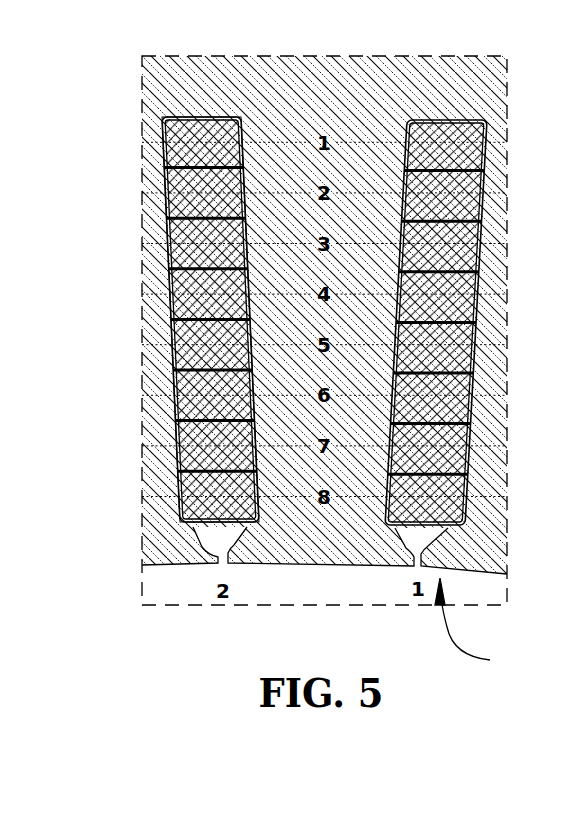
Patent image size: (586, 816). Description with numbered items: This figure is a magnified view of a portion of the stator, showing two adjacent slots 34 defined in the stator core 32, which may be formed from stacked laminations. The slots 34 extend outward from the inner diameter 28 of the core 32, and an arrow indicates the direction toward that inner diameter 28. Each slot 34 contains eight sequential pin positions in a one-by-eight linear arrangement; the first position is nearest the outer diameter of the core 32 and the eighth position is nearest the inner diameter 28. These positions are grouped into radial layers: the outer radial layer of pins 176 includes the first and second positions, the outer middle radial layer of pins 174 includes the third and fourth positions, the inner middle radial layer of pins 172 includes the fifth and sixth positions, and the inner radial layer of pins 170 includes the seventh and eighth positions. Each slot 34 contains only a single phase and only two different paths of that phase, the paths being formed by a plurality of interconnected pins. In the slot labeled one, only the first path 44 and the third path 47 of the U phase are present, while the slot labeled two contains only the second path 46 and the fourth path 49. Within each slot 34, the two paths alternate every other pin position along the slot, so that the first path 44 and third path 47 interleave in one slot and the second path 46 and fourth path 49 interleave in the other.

The inner diameter 28 is at (327, 563).
The stator core 32 is at (321, 88).
The slots 34 is at (476, 627).
The first path 44 is at (457, 520).
The second path 46 is at (195, 528).
The third path 47 is at (457, 477).
The fourth path 49 is at (183, 526).
The inner radial layer of pins 170 is at (120, 422).
The inner middle radial layer of pins 172 is at (102, 322).
The outer middle radial layer of pins 174 is at (120, 222).
The outer radial layer of pins 176 is at (102, 118).